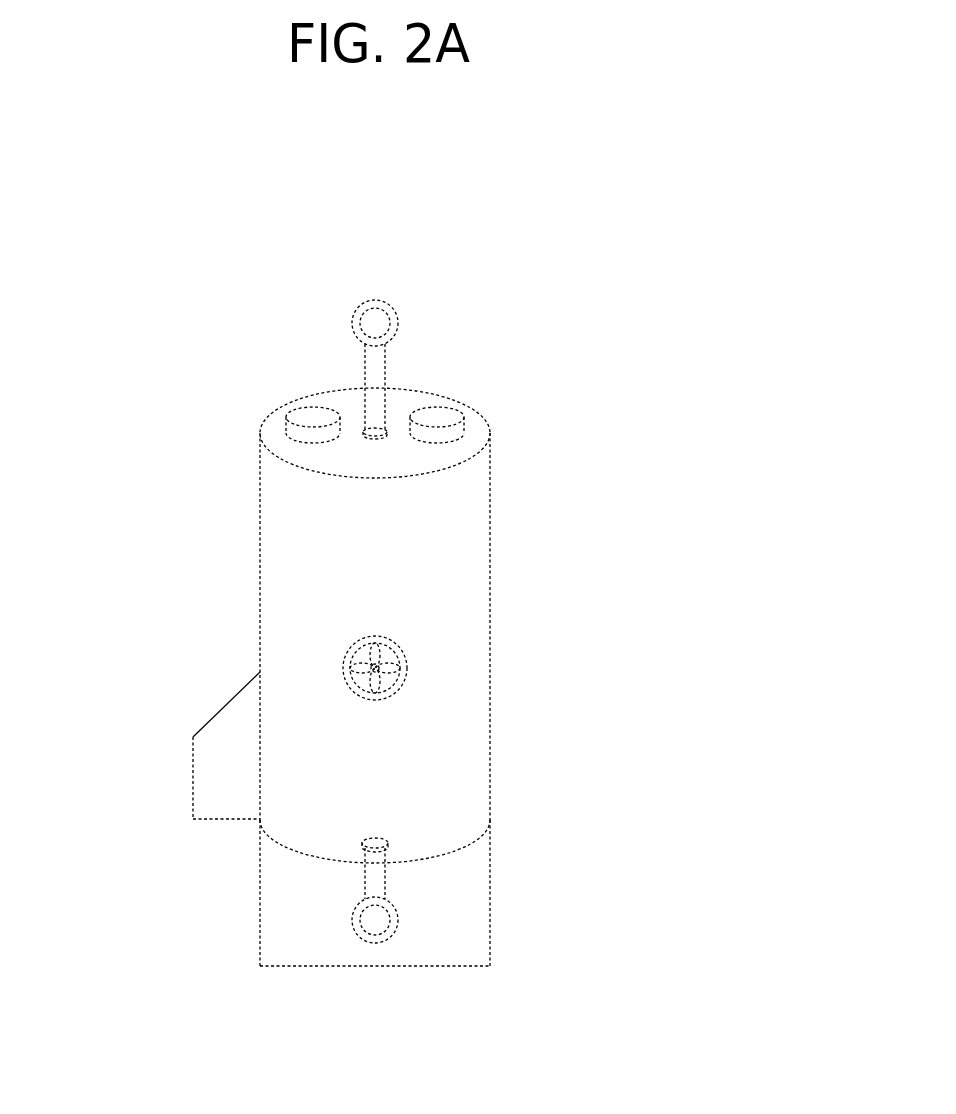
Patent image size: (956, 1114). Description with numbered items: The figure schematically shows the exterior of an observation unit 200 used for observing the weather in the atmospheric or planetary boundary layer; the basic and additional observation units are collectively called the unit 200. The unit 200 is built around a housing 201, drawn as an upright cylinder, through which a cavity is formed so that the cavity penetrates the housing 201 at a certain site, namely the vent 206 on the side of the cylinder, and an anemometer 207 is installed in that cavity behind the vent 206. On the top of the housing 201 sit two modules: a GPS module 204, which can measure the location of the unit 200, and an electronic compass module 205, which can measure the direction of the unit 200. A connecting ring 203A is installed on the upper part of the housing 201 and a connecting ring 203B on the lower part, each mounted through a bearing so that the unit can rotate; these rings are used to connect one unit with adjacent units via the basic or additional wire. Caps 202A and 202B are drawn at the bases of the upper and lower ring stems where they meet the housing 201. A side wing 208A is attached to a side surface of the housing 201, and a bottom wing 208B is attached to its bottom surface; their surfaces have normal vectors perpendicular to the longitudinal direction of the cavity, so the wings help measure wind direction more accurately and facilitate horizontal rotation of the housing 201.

The observation unit 200 is at (703, 234).
The housing 201 is at (490, 545).
The upper cap 202A is at (410, 392).
The lower cap 202B is at (386, 845).
The connecting ring 203A is at (397, 330).
The connecting ring 203B is at (398, 920).
The GPS module 204 is at (284, 423).
The electronic compass module 205 is at (466, 423).
The vent 206 is at (400, 687).
The anemometer 207 is at (407, 658).
The side wing 208A is at (220, 764).
The bottom wing 208B is at (283, 883).